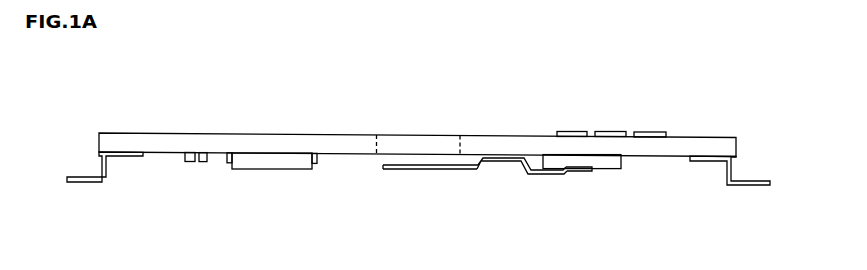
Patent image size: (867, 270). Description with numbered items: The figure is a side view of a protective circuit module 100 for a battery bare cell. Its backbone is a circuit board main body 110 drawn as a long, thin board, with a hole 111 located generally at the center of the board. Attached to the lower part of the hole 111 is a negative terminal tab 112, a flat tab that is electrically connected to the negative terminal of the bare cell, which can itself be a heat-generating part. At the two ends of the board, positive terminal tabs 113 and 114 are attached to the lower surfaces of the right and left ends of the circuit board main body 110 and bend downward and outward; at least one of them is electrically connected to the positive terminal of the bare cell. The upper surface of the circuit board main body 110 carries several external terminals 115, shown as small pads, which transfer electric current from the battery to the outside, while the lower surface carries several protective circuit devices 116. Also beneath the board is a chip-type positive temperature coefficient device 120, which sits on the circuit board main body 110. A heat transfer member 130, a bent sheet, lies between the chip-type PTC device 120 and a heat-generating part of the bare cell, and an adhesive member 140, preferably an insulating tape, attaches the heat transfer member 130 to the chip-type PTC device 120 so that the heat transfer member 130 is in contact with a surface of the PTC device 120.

The protective circuit module 100 is at (115, 70).
The circuit board main body 110 is at (215, 133).
The hole 111 is at (376, 139).
The negative terminal tab 112 is at (468, 178).
The positive terminal tab 113 is at (86, 182).
The positive terminal tab 114 is at (745, 186).
The external terminals 115 is at (571, 131).
The protective circuit devices 116 is at (267, 169).
The chip-type positive temperature coefficient (PTC) device 120 is at (609, 170).
The heat transfer member 130 is at (536, 175).
The adhesive member 140 is at (577, 172).